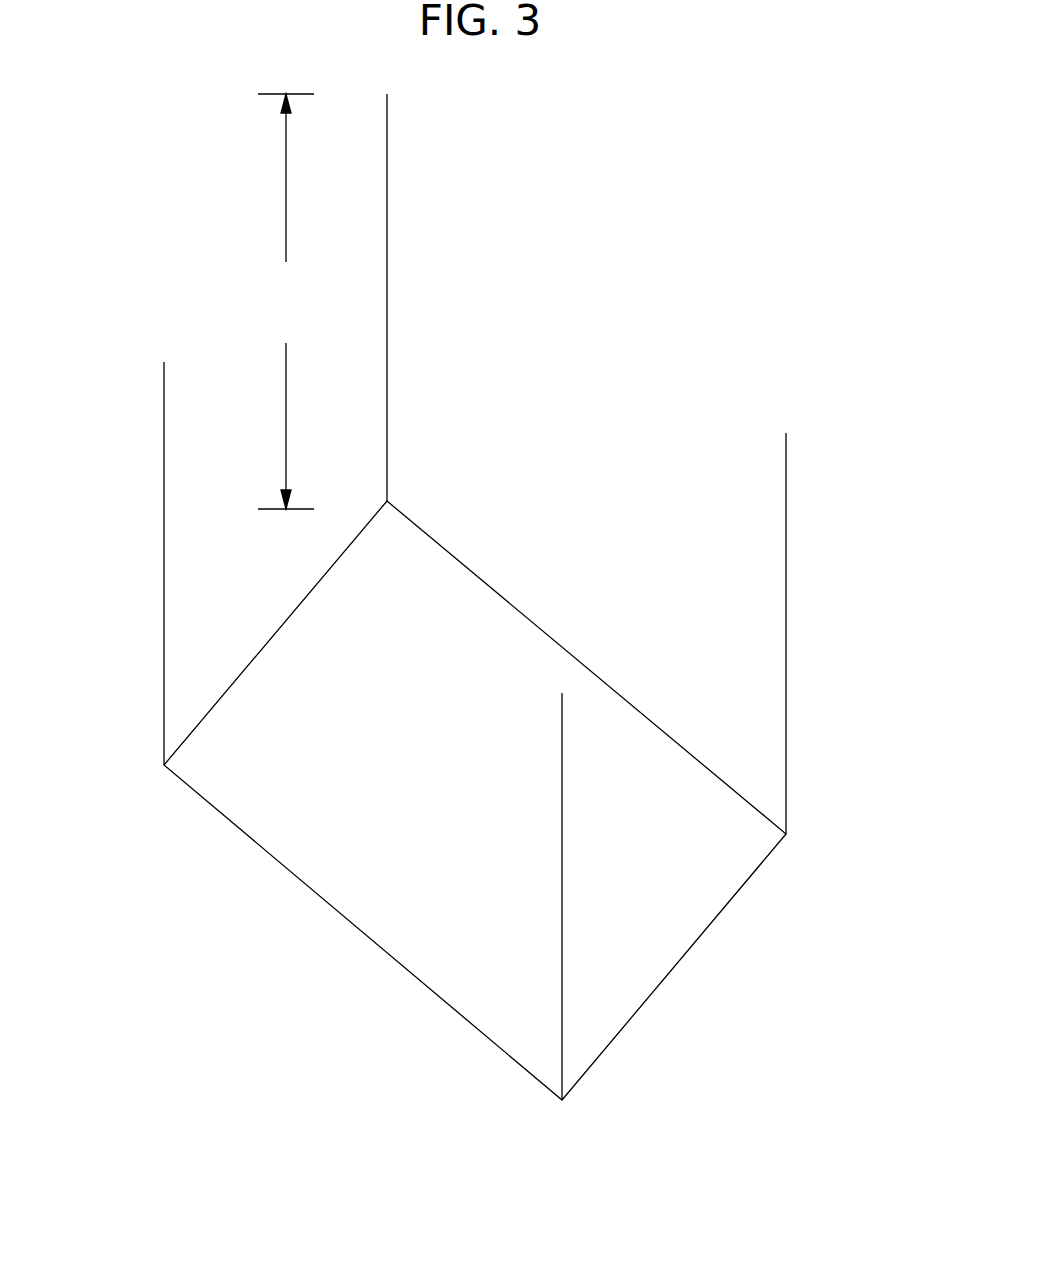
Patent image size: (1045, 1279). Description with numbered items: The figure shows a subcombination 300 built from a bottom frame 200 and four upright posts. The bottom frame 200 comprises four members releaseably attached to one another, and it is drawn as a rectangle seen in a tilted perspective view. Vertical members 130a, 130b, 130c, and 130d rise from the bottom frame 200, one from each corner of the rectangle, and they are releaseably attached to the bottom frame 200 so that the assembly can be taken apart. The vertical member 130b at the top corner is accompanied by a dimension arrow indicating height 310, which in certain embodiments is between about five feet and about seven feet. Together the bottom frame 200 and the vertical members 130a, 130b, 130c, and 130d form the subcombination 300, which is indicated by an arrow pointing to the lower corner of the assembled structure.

The bottom frame 200 is at (360, 932).
The subcombination 300 is at (440, 1115).
The height 310 is at (286, 301).
The vertical member 130a is at (787, 605).
The vertical member 130b is at (388, 312).
The vertical member 130c is at (164, 574).
The vertical member 130d is at (562, 866).